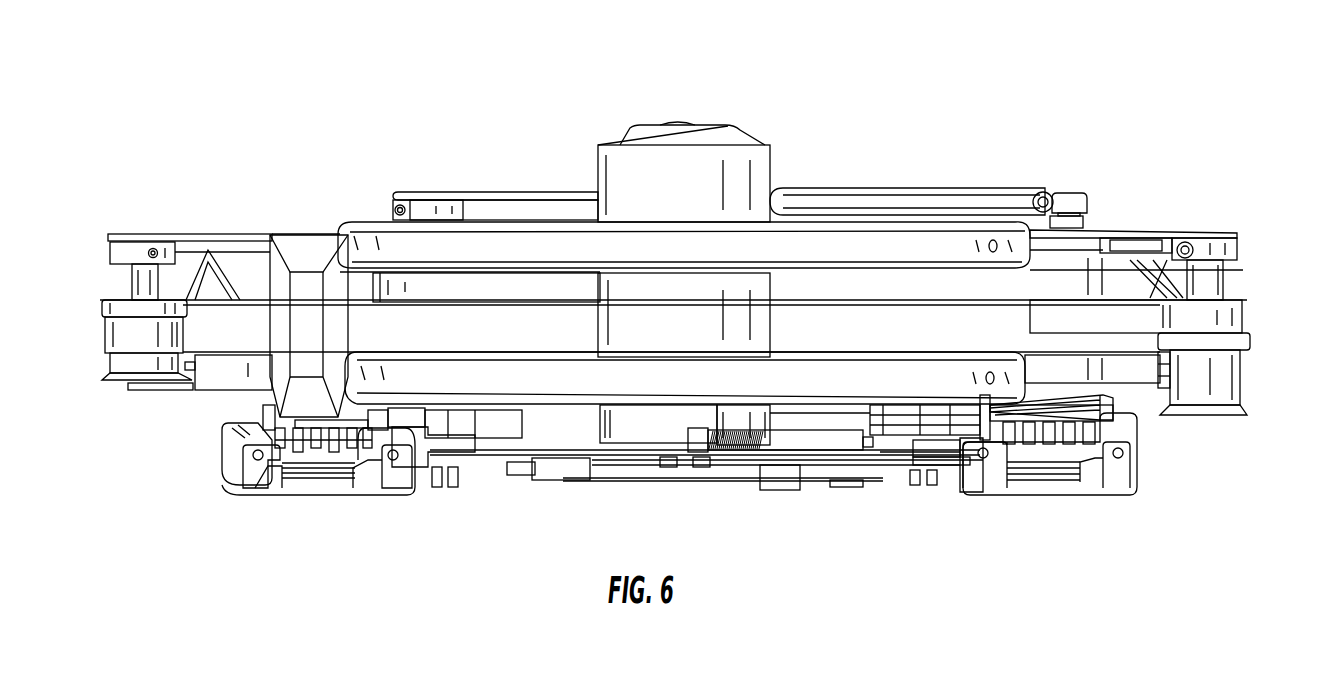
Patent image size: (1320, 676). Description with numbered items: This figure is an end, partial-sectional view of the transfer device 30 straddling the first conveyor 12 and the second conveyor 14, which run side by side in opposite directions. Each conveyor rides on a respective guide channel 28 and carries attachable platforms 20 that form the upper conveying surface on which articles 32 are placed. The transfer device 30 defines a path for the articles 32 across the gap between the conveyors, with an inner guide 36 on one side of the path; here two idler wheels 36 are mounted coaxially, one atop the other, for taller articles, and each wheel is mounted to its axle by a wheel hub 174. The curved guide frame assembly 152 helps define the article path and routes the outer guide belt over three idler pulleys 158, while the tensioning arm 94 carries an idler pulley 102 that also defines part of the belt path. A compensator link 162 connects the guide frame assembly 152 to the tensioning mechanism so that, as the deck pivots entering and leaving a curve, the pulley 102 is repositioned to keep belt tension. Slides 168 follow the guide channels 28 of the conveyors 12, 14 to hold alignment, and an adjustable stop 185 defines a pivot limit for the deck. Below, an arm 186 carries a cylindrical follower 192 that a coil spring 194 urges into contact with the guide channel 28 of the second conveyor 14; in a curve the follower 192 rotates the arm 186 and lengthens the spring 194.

The transfer device 30 is at (691, 225).
The inner guide 36 is at (886, 362).
The wheel hub 174 is at (757, 165).
The arm 94 is at (480, 192).
The idler pulley 102 is at (427, 207).
The compensator link 162 is at (990, 192).
The curved guide frame assembly 152 is at (193, 233).
The articles 32 is at (295, 236).
The idler pulleys 158 is at (100, 300).
The first conveyor 12 is at (206, 455).
The second conveyor 14 is at (1170, 508).
The guide channels 28 is at (258, 490).
The platforms 20 is at (350, 425).
The slides 168 is at (440, 442).
The adjustable stop 185 is at (543, 485).
The coil spring 194 is at (783, 450).
The arm 186 is at (910, 462).
The cylindrical follower 192 is at (938, 453).